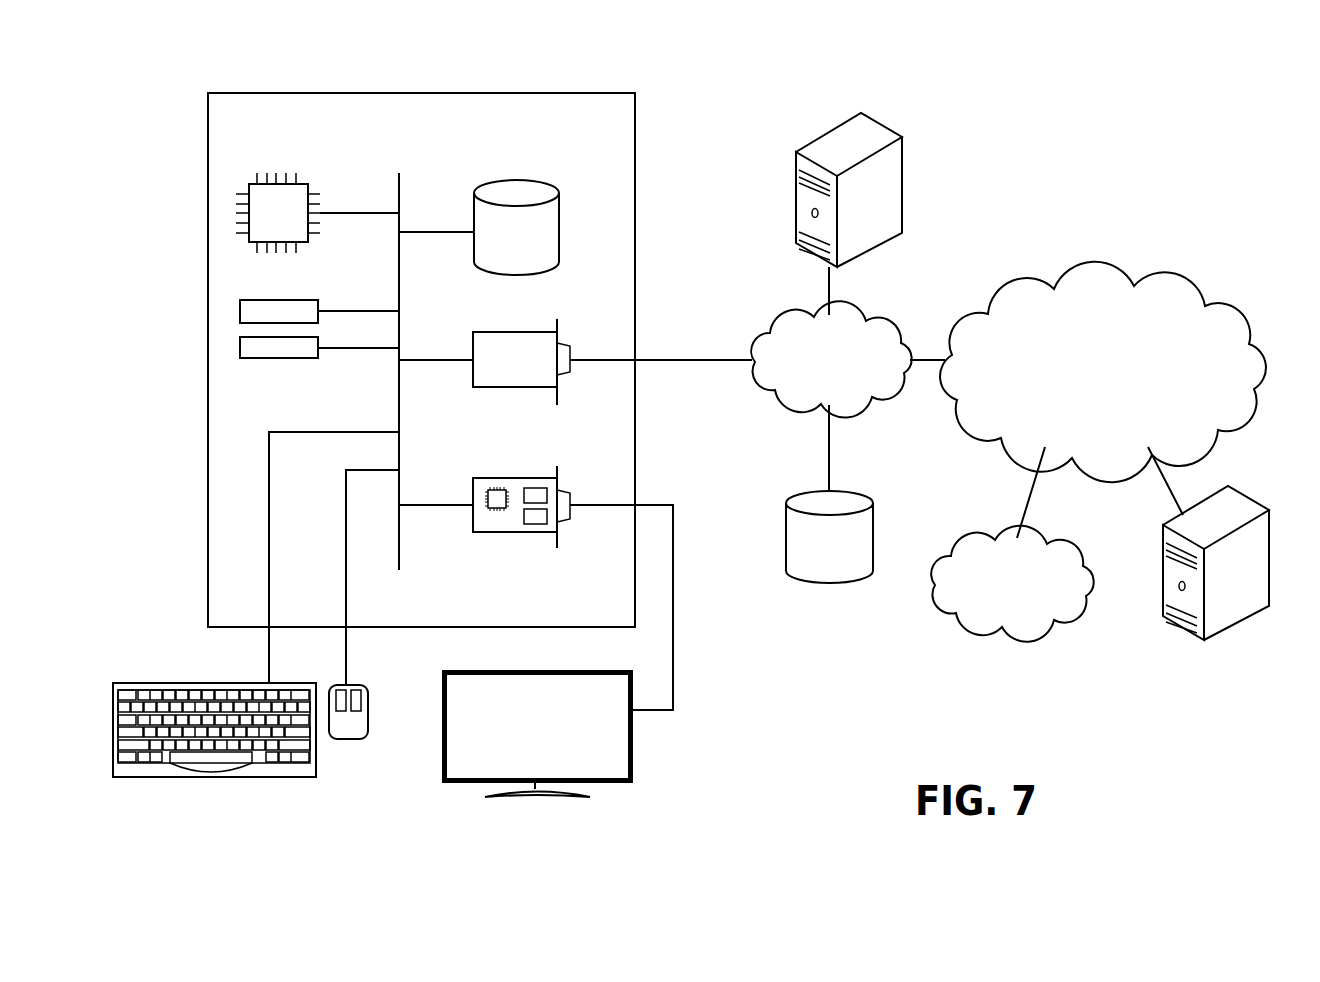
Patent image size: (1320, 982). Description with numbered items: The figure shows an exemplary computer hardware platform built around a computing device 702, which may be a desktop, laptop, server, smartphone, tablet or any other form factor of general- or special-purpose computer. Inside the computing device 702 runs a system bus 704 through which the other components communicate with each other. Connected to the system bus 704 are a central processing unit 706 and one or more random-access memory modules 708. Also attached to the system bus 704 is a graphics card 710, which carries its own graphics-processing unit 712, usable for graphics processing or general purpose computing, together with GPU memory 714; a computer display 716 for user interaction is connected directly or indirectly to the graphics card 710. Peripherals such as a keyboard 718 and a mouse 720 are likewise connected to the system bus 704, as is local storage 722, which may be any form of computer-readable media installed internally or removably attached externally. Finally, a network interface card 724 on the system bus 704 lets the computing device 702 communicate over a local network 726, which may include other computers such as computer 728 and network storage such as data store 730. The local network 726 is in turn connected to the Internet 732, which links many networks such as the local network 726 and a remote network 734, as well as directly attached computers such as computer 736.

The computing device 702 is at (587, 92).
The system bus 704 is at (402, 182).
The central processing unit 706 is at (302, 181).
The random-access memory modules 708 is at (318, 340).
The graphics card 710 is at (472, 488).
The graphics-processing unit 712 is at (495, 506).
The GPU memory 714 is at (533, 524).
The computer display 716 is at (633, 763).
The keyboard 718 is at (217, 778).
The mouse 720 is at (347, 742).
The local storage 722 is at (562, 215).
The network interface card 724 is at (473, 343).
The local network 726 is at (883, 315).
The computer 728 is at (883, 125).
The data store 730 is at (863, 492).
The Internet 732 is at (1148, 280).
The remote network 734 is at (1065, 540).
The computer 736 is at (1243, 492).